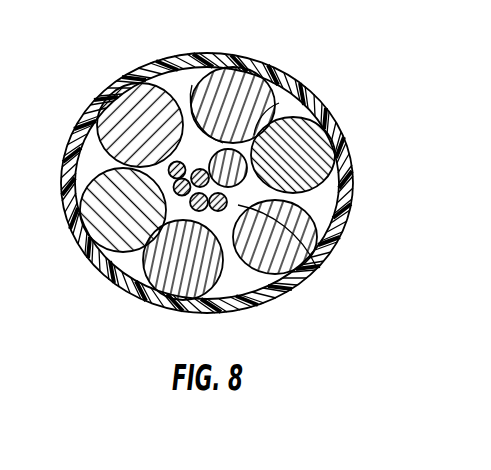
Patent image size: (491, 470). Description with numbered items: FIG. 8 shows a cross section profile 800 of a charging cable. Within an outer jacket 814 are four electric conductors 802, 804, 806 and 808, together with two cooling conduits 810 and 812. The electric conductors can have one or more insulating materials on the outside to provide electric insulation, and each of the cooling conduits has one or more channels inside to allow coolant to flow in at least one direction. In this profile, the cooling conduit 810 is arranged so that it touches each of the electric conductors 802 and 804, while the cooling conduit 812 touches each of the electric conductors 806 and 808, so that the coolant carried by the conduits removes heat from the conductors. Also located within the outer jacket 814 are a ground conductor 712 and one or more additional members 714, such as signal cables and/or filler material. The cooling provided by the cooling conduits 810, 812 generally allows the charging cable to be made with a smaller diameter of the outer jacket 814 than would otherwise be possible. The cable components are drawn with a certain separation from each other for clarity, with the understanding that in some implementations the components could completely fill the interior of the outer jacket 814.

The profile 800 is at (214, 185).
The electric conductor 802 is at (298, 114).
The electric conductor 804 is at (138, 83).
The electric conductor 806 is at (62, 164).
The electric conductor 808 is at (274, 298).
The cooling conduit 810 is at (208, 75).
The cooling conduit 812 is at (147, 268).
The outer jacket 814 is at (350, 166).
The ground conductor 712 is at (219, 150).
The additional member 714 is at (314, 255).